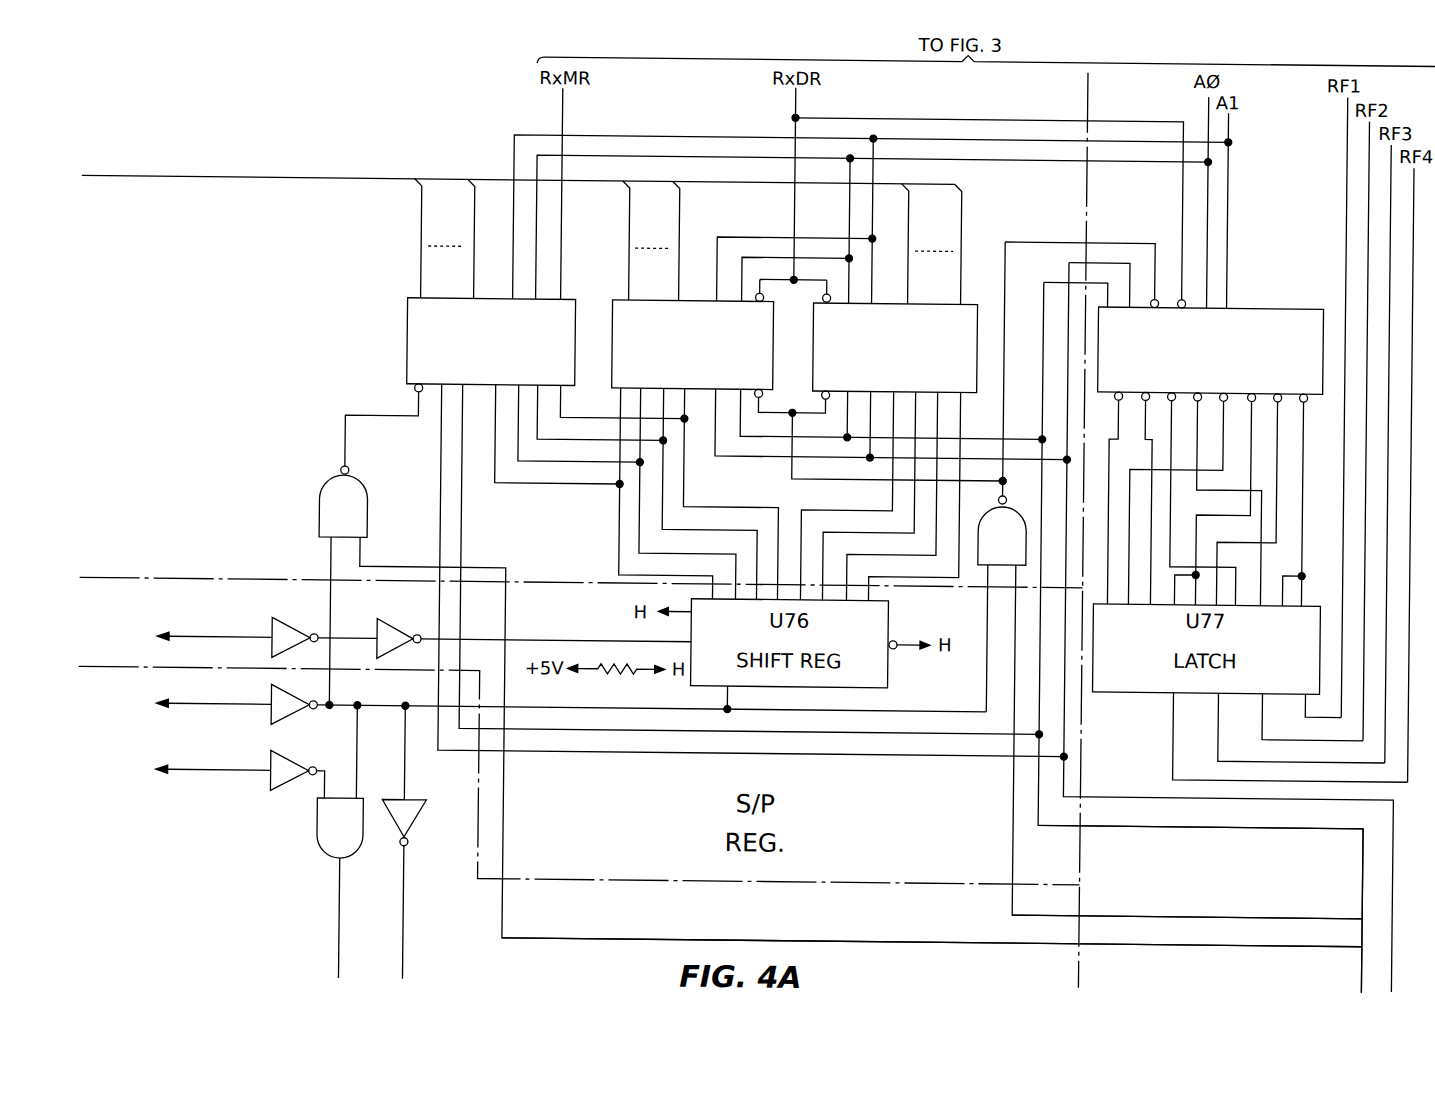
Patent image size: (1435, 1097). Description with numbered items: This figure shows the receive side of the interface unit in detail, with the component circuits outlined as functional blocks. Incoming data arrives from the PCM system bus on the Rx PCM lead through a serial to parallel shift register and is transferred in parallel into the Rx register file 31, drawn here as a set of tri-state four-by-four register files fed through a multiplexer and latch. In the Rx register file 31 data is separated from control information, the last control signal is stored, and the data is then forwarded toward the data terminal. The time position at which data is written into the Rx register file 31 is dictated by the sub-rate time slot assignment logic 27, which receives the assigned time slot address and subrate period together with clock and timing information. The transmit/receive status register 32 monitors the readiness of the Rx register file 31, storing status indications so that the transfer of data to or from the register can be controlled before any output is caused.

The Rx register file 31 is at (736, 536).
The sub-rate time slot assignment logic 27 is at (259, 783).
The transmit/receive status register 32 is at (932, 906).